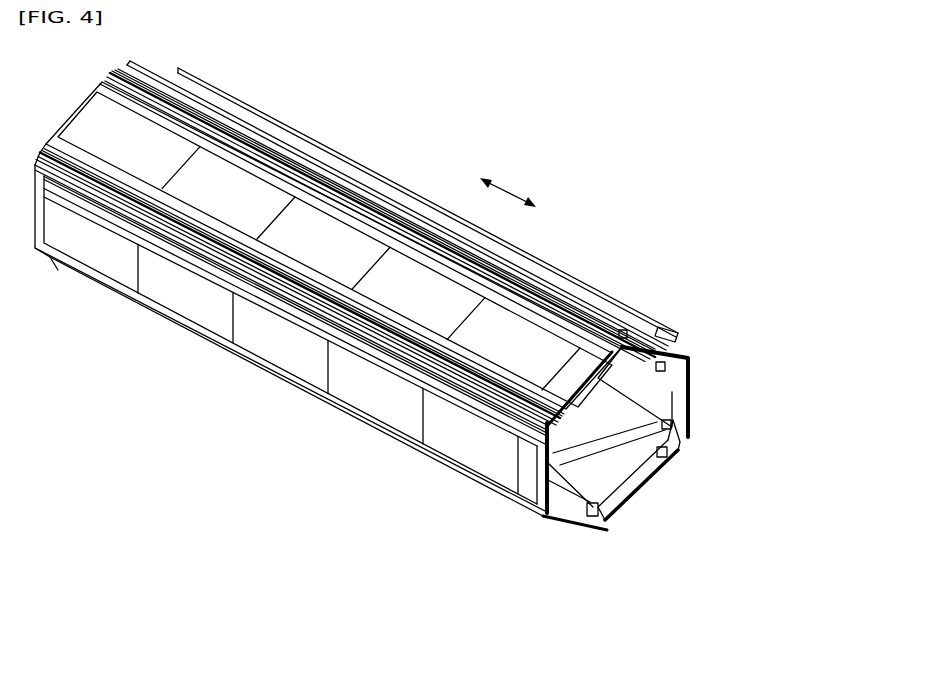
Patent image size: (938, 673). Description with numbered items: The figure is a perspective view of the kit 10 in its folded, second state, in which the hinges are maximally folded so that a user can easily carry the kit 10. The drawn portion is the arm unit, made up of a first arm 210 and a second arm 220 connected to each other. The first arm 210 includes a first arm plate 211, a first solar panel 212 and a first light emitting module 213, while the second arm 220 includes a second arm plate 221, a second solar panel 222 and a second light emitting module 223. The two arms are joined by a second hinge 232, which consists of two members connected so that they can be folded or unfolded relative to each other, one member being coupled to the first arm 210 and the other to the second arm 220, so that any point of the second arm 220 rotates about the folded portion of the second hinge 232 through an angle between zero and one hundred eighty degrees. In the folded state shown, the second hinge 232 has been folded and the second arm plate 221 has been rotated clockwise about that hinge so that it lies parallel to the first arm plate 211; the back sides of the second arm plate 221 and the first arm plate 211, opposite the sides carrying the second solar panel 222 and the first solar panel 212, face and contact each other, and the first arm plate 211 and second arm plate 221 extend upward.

The kit 10 is at (446, 338).
The first arm 210 is at (262, 548).
The first arm plate 211 is at (522, 500).
The first solar panel 212 is at (440, 476).
The first light emitting module 213 is at (460, 443).
The second arm 220 is at (811, 325).
The second arm plate 221 is at (677, 380).
The second solar panel 222 is at (645, 392).
The second light emitting module 223 is at (690, 360).
The second hinge 232 is at (655, 493).